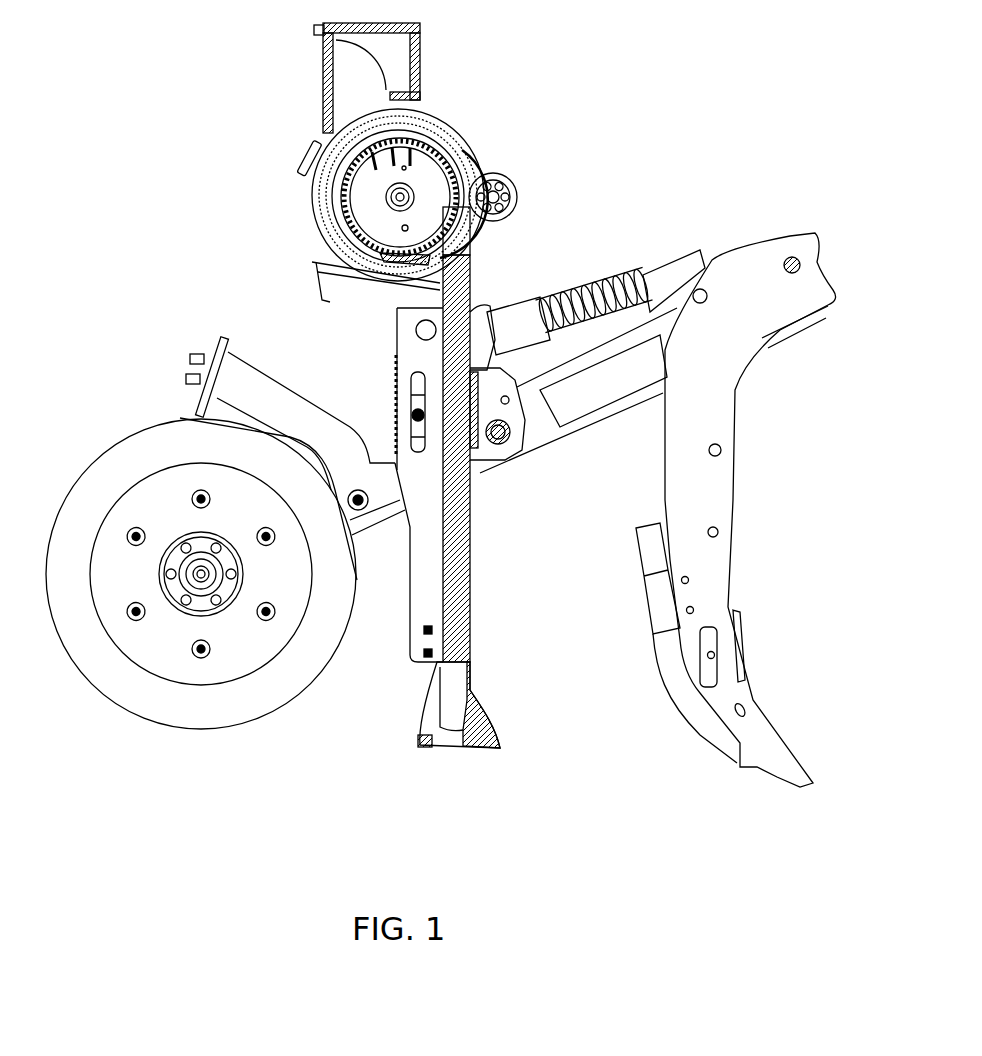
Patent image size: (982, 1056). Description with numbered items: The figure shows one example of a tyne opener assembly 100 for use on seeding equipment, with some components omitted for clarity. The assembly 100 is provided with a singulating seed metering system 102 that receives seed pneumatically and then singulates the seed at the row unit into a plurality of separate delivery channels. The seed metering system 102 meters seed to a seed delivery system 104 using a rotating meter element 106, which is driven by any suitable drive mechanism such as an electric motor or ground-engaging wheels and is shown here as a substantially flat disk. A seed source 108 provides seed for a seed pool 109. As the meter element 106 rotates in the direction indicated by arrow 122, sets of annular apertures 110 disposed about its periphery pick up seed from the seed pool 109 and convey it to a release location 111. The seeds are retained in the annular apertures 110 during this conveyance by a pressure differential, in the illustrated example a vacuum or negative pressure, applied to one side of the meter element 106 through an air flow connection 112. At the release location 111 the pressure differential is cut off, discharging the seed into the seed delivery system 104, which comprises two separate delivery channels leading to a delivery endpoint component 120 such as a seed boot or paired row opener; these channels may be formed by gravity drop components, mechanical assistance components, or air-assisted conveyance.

The tyne opener assembly 100 is at (728, 78).
The singulating seed metering system 102 is at (500, 135).
The seed delivery system 104 is at (508, 511).
The rotating meter element 106 is at (340, 214).
The seed source 108 is at (340, 108).
The seed pool 109 is at (405, 262).
The annular apertures 110 is at (377, 250).
The release location 111 is at (484, 152).
The air flow connection 112 is at (325, 275).
The delivery endpoint component 120 is at (482, 698).
The arrow 122 is at (300, 172).